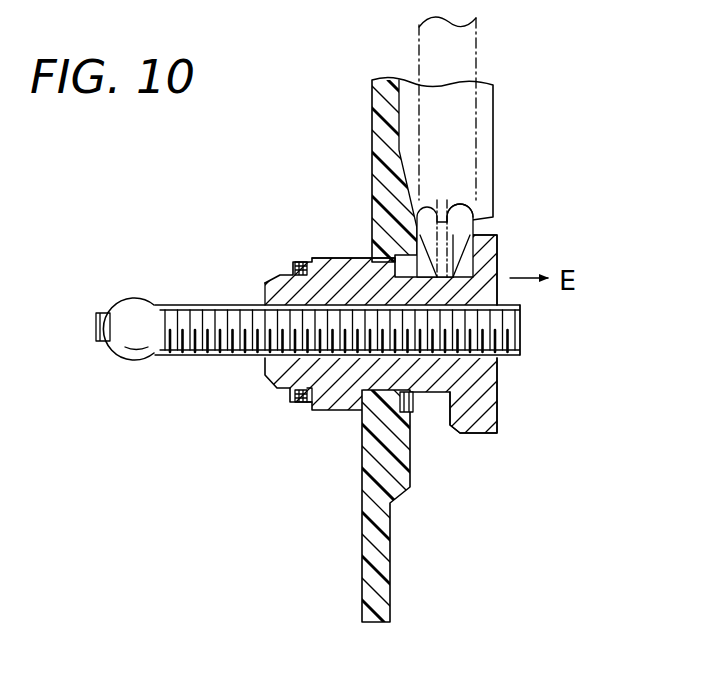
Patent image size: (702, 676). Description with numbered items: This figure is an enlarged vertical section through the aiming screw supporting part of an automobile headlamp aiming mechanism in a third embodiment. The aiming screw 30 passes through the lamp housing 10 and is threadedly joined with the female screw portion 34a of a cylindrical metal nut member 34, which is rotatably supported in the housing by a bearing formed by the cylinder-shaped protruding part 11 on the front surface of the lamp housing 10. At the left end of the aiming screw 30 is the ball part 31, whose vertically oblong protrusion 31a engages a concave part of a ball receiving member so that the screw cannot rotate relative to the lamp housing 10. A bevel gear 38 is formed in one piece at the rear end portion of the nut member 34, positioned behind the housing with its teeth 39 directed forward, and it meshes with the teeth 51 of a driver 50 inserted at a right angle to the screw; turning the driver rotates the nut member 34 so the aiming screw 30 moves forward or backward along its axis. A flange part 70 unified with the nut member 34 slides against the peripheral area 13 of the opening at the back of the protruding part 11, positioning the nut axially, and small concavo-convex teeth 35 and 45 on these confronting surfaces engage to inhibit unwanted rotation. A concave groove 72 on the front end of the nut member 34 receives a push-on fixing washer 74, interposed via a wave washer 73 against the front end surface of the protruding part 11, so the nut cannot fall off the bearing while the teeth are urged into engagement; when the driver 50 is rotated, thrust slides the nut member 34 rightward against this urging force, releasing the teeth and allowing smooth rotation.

The lamp housing 10 is at (372, 113).
The cylinder-shaped protruding part 11 is at (313, 258).
The peripheral area of the opening 13 is at (400, 273).
The aiming screw 30 is at (225, 357).
The ball part 31 is at (136, 352).
The protrusion 31a is at (100, 342).
The nut member 34 is at (270, 292).
The female screw portion 34a is at (518, 363).
The small concavo-convex teeth 35 is at (365, 412).
The bevel gear 38 is at (497, 242).
The teeth of the bevel gear 39 is at (460, 427).
The small concavo-convex teeth 45 is at (412, 402).
The driver 50 is at (481, 60).
The teeth of the driver 51 is at (482, 221).
The flange part 70 is at (372, 232).
The concave groove 72 is at (295, 262).
The wave washer 73 is at (303, 405).
The push-on fixing washer 74 is at (296, 402).